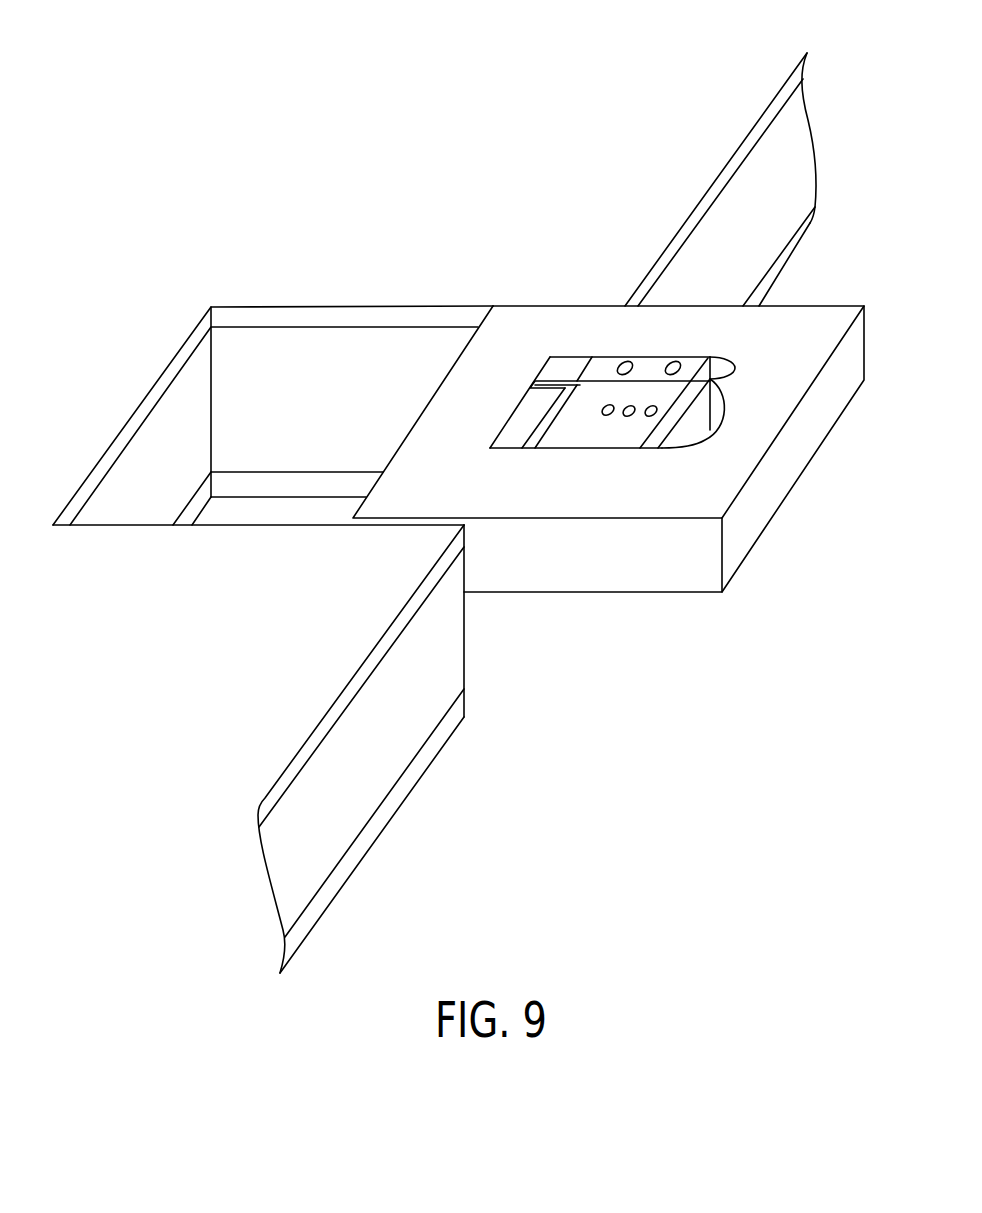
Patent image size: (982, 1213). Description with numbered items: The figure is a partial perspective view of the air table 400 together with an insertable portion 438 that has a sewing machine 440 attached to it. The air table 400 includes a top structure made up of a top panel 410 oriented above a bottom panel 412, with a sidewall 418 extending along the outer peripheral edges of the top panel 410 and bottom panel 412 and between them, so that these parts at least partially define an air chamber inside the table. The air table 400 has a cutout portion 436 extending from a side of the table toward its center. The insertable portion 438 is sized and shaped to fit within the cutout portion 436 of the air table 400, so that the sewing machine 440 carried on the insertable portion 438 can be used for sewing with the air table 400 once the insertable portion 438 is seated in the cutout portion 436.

The air table 400 is at (287, 199).
The top panel 410 is at (734, 159).
The bottom panel 412 is at (802, 232).
The sidewall 418 is at (752, 258).
The cutout portion 436 is at (270, 352).
The insertable portion 438 is at (717, 502).
The sewing machine 440 is at (682, 404).